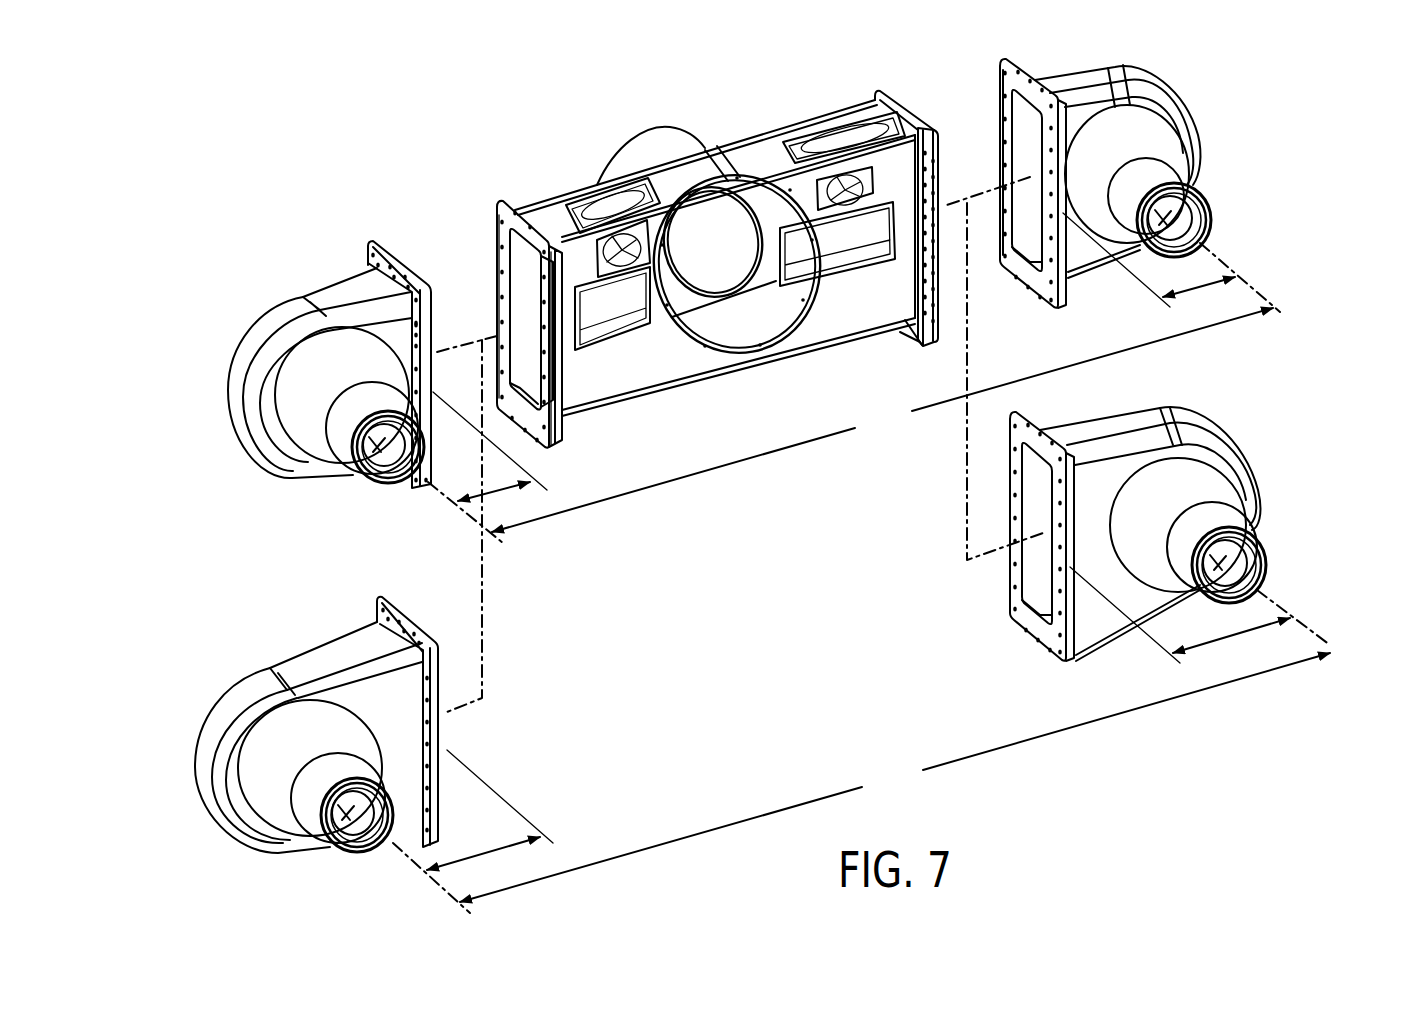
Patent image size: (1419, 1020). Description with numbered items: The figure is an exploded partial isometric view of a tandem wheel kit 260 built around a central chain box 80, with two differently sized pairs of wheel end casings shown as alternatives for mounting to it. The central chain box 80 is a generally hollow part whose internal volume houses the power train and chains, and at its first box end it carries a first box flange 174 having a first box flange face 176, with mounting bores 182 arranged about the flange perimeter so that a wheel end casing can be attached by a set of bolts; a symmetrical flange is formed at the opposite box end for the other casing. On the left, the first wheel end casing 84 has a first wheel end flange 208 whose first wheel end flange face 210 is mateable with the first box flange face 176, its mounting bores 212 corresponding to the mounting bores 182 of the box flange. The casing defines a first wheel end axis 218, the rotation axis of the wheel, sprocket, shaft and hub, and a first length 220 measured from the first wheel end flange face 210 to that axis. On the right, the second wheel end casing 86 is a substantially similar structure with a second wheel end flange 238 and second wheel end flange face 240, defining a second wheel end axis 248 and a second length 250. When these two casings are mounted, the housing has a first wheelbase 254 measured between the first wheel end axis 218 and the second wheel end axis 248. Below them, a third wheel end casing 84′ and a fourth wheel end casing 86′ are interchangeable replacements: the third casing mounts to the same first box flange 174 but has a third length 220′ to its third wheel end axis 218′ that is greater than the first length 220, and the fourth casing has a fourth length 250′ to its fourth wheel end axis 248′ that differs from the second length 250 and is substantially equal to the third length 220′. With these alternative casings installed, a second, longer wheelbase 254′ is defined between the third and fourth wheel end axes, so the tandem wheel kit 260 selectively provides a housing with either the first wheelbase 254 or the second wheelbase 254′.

The central chain box 80 is at (737, 370).
The first wheel end casing 84 is at (197, 272).
The third wheel end casing 84′ is at (143, 700).
The second wheel end casing 86 is at (1296, 158).
The fourth wheel end casing 86′ is at (1296, 498).
The first box flange 174 is at (502, 198).
The first box flange face 176 is at (497, 240).
The mounting bores 182 is at (562, 433).
The first wheel end flange 208 is at (396, 243).
The first wheel end flange face 210 is at (432, 313).
The mounting bores 212 is at (423, 340).
The first wheel end axis 218 is at (440, 492).
The third wheel end axis 218′ is at (403, 862).
The first length 220 is at (497, 507).
The third length 220′ is at (535, 840).
The second wheel end flange 238 is at (1036, 62).
The second wheel end flange face 240 is at (1003, 117).
The second wheel end axis 248 is at (1250, 283).
The fourth wheel end axis 248′ is at (1315, 612).
The second length 250 is at (1205, 298).
The fourth length 250′ is at (1303, 620).
The first wheelbase 254 is at (882, 420).
The second wheelbase 254′ is at (845, 712).
The tandem wheel kit 260 is at (895, 777).